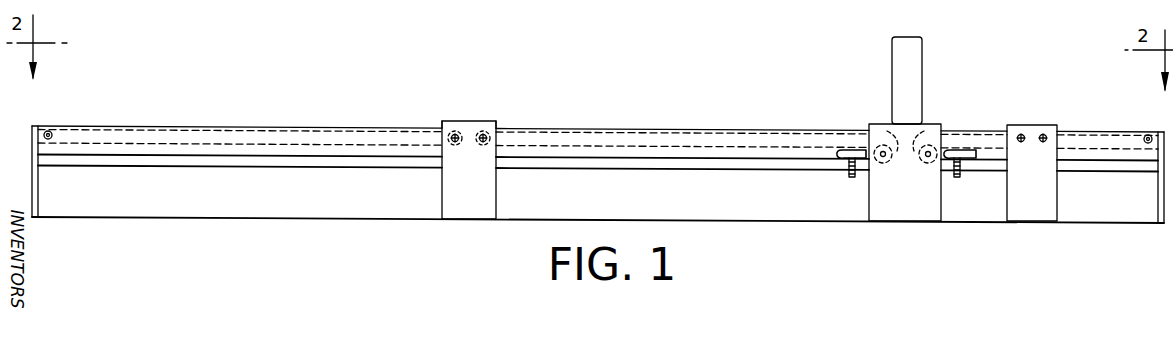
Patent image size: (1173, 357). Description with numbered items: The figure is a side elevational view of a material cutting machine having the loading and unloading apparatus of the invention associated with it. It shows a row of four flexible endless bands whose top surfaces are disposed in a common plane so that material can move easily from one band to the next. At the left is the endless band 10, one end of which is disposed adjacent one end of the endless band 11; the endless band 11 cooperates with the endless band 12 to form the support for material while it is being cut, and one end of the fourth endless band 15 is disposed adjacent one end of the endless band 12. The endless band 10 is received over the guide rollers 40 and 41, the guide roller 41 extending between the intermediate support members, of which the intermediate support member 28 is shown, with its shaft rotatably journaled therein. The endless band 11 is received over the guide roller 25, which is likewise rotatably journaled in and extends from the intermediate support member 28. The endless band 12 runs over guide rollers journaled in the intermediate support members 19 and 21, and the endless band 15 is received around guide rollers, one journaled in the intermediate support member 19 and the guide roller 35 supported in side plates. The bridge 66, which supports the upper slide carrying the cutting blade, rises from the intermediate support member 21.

The endless band 10 is at (183, 103).
The endless band 11 is at (736, 130).
The fourth endless band 15 is at (1081, 132).
The guide roller 40 is at (55, 128).
The guide roller 35 is at (1168, 132).
The guide roller 41 is at (429, 113).
The guide roller 25 is at (501, 123).
The intermediate support member 28 is at (480, 199).
The intermediate support member 21 is at (901, 197).
The intermediate support member 19 is at (1042, 197).
The bridge 66 is at (928, 60).
The endless band 12 is at (966, 132).